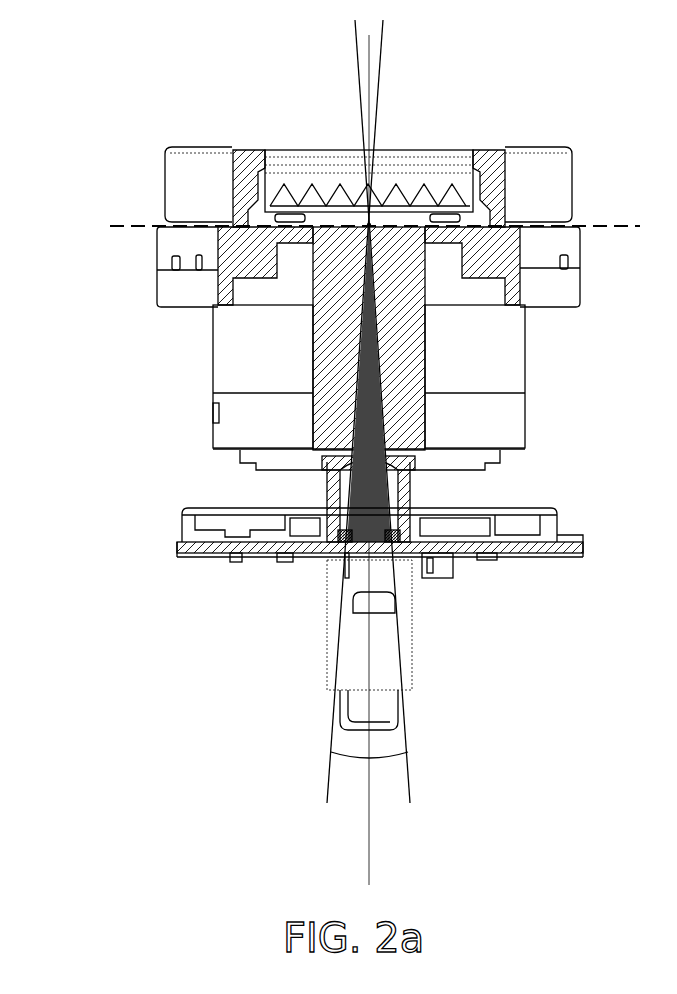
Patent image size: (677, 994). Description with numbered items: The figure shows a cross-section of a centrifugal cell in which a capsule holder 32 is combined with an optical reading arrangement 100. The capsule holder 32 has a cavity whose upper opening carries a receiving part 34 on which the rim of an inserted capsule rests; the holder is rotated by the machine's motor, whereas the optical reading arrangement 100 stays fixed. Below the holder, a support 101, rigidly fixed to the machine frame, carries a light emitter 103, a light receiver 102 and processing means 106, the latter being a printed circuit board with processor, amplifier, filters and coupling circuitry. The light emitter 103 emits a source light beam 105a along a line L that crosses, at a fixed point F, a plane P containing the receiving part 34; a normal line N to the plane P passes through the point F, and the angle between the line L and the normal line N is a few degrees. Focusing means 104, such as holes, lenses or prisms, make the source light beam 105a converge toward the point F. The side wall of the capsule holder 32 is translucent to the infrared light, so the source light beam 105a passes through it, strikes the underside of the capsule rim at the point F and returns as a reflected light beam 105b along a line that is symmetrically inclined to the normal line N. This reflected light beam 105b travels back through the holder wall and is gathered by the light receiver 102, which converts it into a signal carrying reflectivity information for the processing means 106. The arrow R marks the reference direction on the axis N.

The capsule holder 32 is at (173, 288).
The receiving part 34 is at (380, 222).
The optical reading arrangement 100 is at (144, 450).
The support 101 is at (178, 556).
The light receiver 102 is at (338, 544).
The light emitter 103 is at (394, 545).
The focusing means 104 is at (363, 455).
The source light beam 105a is at (380, 340).
The reflected light beam 105b is at (362, 330).
The processing means 106 is at (514, 550).
The normal line N is at (368, 466).
The line L is at (356, 45).
The reference direction R is at (358, 76).
The plane P is at (375, 229).
The fixed point F is at (367, 222).